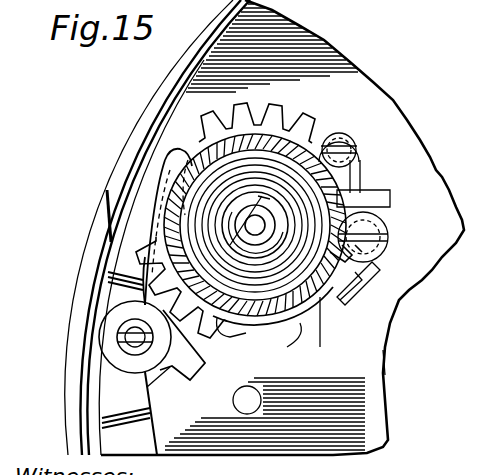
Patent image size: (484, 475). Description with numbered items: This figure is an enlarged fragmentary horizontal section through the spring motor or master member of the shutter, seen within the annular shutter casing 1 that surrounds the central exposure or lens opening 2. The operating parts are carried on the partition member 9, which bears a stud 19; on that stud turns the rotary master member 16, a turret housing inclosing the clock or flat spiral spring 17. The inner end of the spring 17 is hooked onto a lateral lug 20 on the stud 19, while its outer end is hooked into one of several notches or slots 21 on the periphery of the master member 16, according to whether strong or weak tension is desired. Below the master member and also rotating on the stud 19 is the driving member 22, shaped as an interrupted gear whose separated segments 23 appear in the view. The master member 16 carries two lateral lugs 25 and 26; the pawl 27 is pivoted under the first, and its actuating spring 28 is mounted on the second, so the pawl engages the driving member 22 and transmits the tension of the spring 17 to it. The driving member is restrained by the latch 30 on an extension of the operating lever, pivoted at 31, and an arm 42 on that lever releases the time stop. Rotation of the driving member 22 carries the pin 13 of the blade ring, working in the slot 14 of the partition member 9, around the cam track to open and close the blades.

The annular shutter casing 1 is at (172, 72).
The central exposure or lens opening 2 is at (282, 227).
The partition member 9 is at (388, 355).
The upwardly projecting pin 13 is at (232, 315).
The slot 14 is at (223, 330).
The rotary master member 16 is at (335, 300).
The spring 17 is at (122, 158).
The stud 19 is at (168, 243).
The lateral lug 20 is at (265, 198).
The notches or slots 21 is at (165, 205).
The driving member 22 is at (352, 368).
The separated segments 23 is at (288, 112).
The lateral lug 25 is at (390, 232).
The lateral lug 26 is at (344, 137).
The pawl 27 is at (352, 293).
The actuating spring 28 is at (360, 175).
The latch 30 is at (165, 160).
The pivot 31 is at (120, 342).
The arm 42 is at (203, 385).